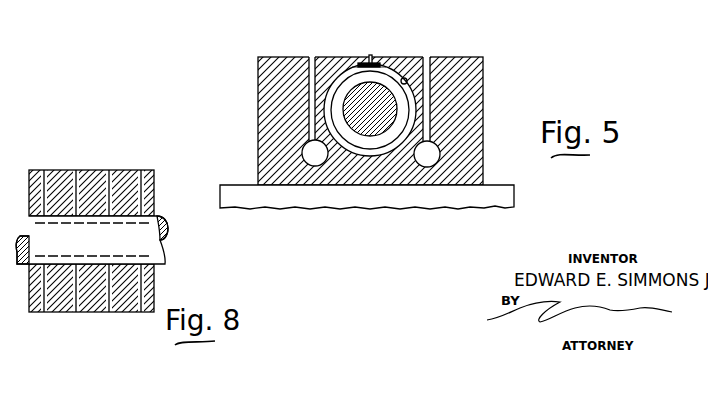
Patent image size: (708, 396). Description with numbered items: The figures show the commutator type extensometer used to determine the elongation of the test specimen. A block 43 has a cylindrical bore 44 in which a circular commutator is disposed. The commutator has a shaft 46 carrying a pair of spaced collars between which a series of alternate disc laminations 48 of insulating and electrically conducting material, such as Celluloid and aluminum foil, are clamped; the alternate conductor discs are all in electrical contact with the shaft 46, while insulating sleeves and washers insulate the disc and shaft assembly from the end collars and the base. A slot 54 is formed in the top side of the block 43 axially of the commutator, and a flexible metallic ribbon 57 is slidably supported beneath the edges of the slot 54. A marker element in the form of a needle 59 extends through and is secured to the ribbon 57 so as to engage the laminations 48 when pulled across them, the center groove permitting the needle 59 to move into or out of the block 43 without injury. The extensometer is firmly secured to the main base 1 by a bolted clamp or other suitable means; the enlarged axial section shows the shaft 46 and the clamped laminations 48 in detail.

In FIG. 5, the main base 1 is at (232, 190).
In FIG. 5, the block 43 is at (474, 110).
In FIG. 5, the cylindrical bore 44 is at (407, 79).
In FIG. 5, the shaft 46 is at (378, 132).
In FIG. 8, the shaft 46 is at (148, 246).
In FIG. 5, the disc laminations 48 is at (338, 97).
In FIG. 8, the disc laminations 48 is at (98, 170).
In FIG. 5, the slot 54 is at (379, 63).
In FIG. 5, the bonding layer 57 is at (366, 68).
In FIG. 5, the needle 59 is at (368, 57).